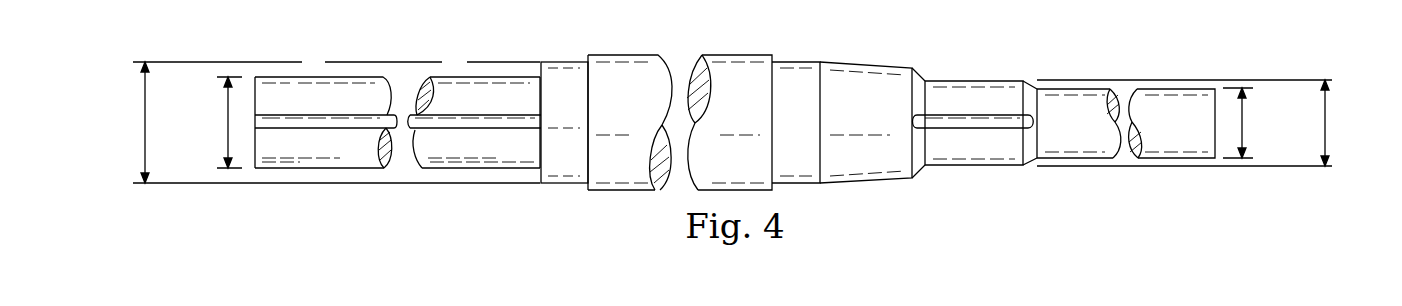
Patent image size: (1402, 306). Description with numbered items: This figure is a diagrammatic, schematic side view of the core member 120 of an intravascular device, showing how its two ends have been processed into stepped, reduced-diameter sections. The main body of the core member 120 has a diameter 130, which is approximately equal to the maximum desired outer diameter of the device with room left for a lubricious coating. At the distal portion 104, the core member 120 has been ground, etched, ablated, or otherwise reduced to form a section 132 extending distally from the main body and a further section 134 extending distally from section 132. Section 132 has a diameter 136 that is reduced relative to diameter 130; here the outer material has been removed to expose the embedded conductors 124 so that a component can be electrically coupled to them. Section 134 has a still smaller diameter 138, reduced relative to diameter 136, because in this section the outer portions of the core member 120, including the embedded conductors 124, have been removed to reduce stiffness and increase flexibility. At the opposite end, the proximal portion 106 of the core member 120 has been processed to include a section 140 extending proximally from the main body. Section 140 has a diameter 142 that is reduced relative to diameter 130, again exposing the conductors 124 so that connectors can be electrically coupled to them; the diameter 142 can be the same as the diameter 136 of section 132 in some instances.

The distal portion 104 is at (878, 124).
The proximal portion 106 is at (397, 141).
The core member 120 is at (626, 55).
The embedded conductors 124 is at (473, 118).
The diameter of the main body 130 is at (145, 121).
The distal section 132 is at (975, 81).
The distal tip section 134 is at (1165, 89).
The diameter of section 132 136 is at (1325, 122).
The diameter of section 134 138 is at (1242, 122).
The proximal section 140 is at (321, 77).
The diameter of section 140 142 is at (228, 121).